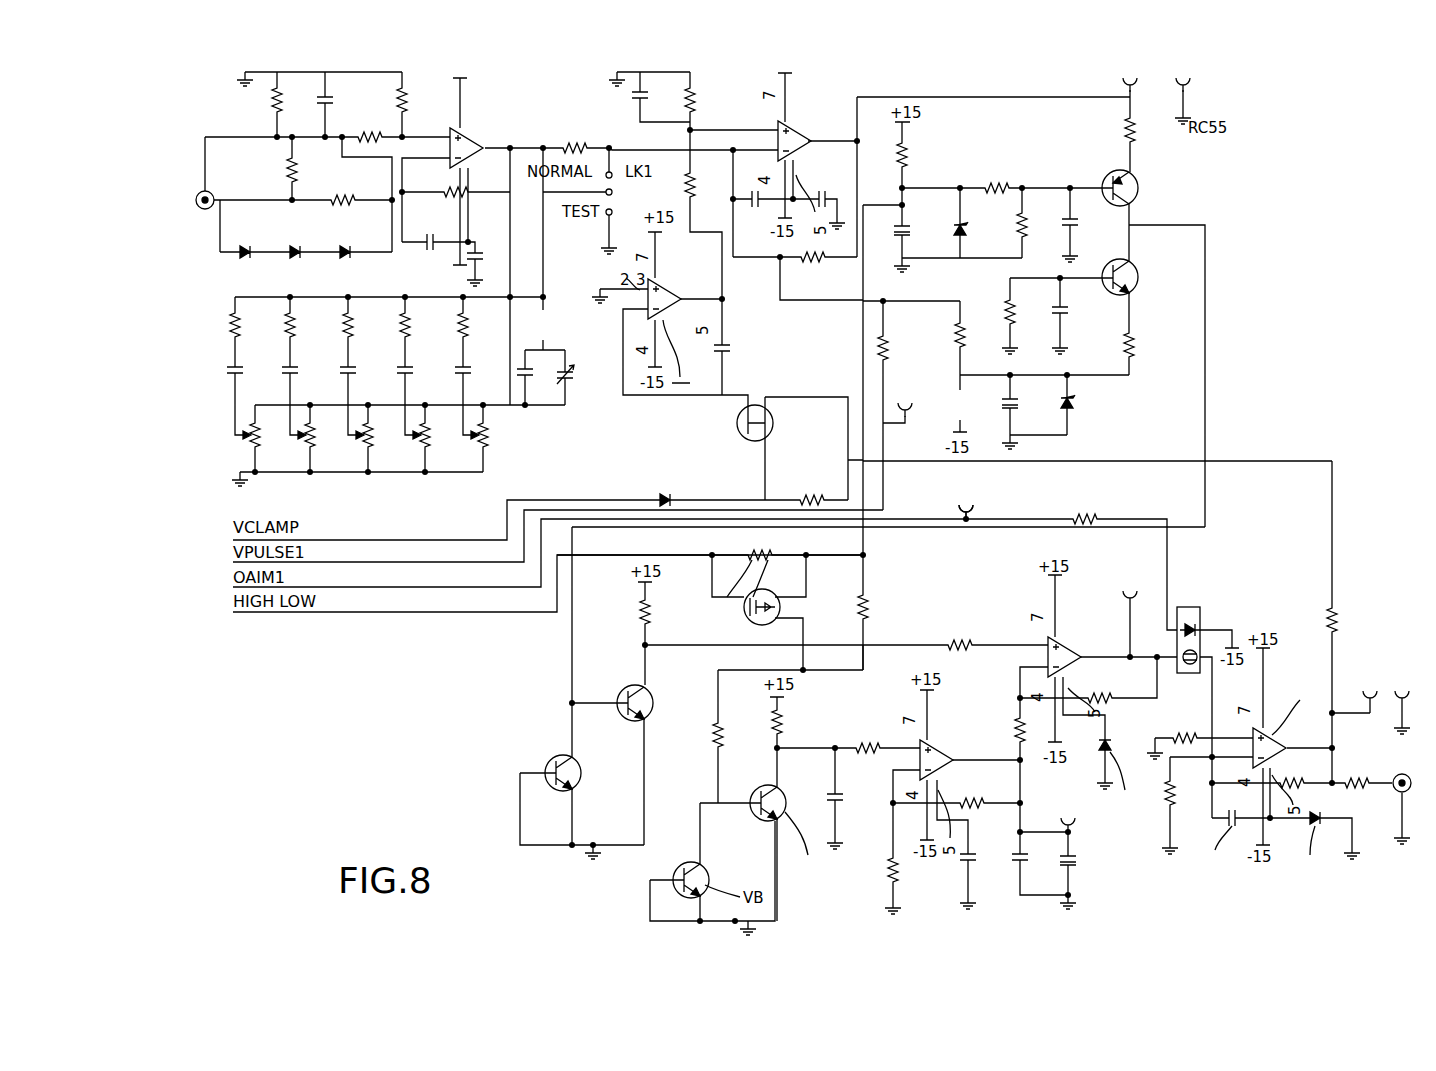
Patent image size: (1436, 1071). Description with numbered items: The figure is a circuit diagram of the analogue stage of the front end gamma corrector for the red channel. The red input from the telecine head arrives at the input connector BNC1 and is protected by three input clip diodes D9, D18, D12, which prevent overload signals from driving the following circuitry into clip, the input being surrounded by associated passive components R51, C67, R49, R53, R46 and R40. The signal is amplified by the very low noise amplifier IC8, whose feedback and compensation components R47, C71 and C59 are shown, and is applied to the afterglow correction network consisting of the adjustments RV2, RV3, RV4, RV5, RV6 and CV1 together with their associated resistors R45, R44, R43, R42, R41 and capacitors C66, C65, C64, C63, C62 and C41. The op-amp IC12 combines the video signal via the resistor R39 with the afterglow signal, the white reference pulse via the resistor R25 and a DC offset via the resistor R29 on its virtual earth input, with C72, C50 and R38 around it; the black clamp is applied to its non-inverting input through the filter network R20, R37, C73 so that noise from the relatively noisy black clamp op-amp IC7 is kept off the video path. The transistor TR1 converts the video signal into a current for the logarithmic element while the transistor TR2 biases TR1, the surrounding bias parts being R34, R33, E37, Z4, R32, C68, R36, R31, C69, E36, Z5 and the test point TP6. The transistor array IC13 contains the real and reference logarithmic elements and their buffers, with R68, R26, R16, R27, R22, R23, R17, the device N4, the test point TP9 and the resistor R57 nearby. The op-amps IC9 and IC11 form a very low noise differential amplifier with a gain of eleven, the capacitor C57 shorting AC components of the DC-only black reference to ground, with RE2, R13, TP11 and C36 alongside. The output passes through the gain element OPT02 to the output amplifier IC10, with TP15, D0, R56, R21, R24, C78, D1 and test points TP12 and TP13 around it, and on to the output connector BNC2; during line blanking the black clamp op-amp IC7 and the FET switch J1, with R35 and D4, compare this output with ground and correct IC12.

The input BNC connector (red) BNC1 is at (226, 184).
The resistor 6R0 R51 is at (293, 101).
The capacitor 1u C67 is at (338, 98).
The resistor 47 R49 is at (369, 123).
The resistor 108 R53 is at (417, 100).
The resistor 91 R46 is at (308, 167).
The resistor 470 / 220 R40 is at (344, 187).
The input clip diode D9 is at (249, 234).
The input clip diode D18 is at (308, 234).
The input clip diode D12 is at (365, 234).
The very low noise amplifier IC8 is at (433, 128).
The resistor 1X R47 is at (449, 176).
The capacitor 4p7 C71 is at (430, 227).
The capacitor 8p C59 is at (491, 257).
The resistor R39 is at (576, 131).
The filter capacitor C73 is at (659, 93).
The filter resistor R37 is at (707, 96).
The filter resistor R20 is at (705, 190).
The op-amp IC12 is at (808, 121).
The capacitor 4p7 C72 is at (753, 180).
The capacitor 8p0 C50 is at (832, 180).
The resistor LK RC55 R38 is at (822, 275).
The resistor 220 R34 is at (926, 152).
The resistor 470 R33 is at (997, 171).
The electrolytic capacitor 100uf E37 is at (922, 234).
The zener diode 6V8 Z4 is at (979, 226).
The resistor 220 R32 is at (1038, 226).
The capacitor 100n C68 is at (1090, 228).
The resistor 1K21 R36 is at (1150, 122).
The transistor TR1 is at (1152, 190).
The transistor TR2 is at (1152, 280).
The resistor 220 / 1K2 R31 is at (1086, 330).
The capacitor 100n C69 is at (1082, 316).
The resistor R29 is at (977, 331).
The resistor R25 is at (899, 352).
The test point VP TP6 is at (916, 395).
The electrolytic capacitor 100uf E36 is at (1029, 413).
The zener diode 2V7 Z5 is at (1085, 407).
The resistor 69K R45 is at (251, 325).
The resistor 56K R44 is at (306, 325).
The resistor 43K R43 is at (364, 325).
The resistor 33K R42 is at (421, 325).
The resistor 10K R41 is at (479, 325).
The capacitor 1n C66 is at (254, 376).
The capacitor 338p / 47p C65 is at (645, 621).
The capacitor 100p C64 is at (367, 376).
The capacitor 33p C63 is at (637, 584).
The capacitor 22p C62 is at (479, 376).
The afterglow correction adjustment RV2 is at (271, 433).
The afterglow correction adjustment RV3 is at (325, 433).
The afterglow correction adjustment RV4 is at (383, 433).
The afterglow correction adjustment RV5 is at (440, 433).
The afterglow correction adjustment RV6 is at (498, 433).
The capacitor 10p C41 is at (541, 376).
The afterglow correction adjustment CV1 is at (584, 376).
The black clamp op-amp IC7 is at (681, 280).
The FET switch J1 is at (786, 419).
The resistor 47K R35 is at (813, 482).
The diode LN4140 D4 is at (681, 480).
The test point OC TP9 is at (965, 494).
The resistor 561 R57 is at (1084, 502).
The MOSFET ZUP4424A N4 is at (781, 579).
The resistor 47K R22 is at (718, 626).
The resistor 0R0 R23 is at (878, 610).
The resistor 100K R27 is at (665, 613).
The resistor 100 R17 is at (962, 625).
The logarithmic element transistor array IC13 is at (687, 787).
The resistor 100K R68 is at (739, 738).
The resistor 100K R26 is at (798, 723).
The resistor 100 R16 is at (865, 730).
The op-amp IC11 is at (898, 743).
The resistor 1K AC55 RE2 is at (982, 786).
The resistor 100 RC55 R13 is at (1058, 727).
The test point TP11 is at (1070, 814).
The capacitor C57 is at (1039, 866).
The electrolytic capacitor 101uf C36 is at (1092, 865).
The op-amp IC9 is at (1077, 638).
The test point TP15 is at (1133, 590).
The diode 1AT15 D0 is at (1129, 781).
The opto coupler OPT02 is at (1199, 630).
The resistor 330 R56 is at (1186, 788).
The output amplifier IC10 is at (1230, 730).
The test point TP12 is at (1357, 689).
The test point 0V TP13 is at (1398, 679).
The resistor 1K R21 is at (1348, 621).
The resistor 75 R24 is at (1355, 766).
The output BNC connector (red) BNC2 is at (1393, 765).
The capacitor 4p7 C78 is at (1220, 849).
The diode 1AT15 D1 is at (1311, 852).